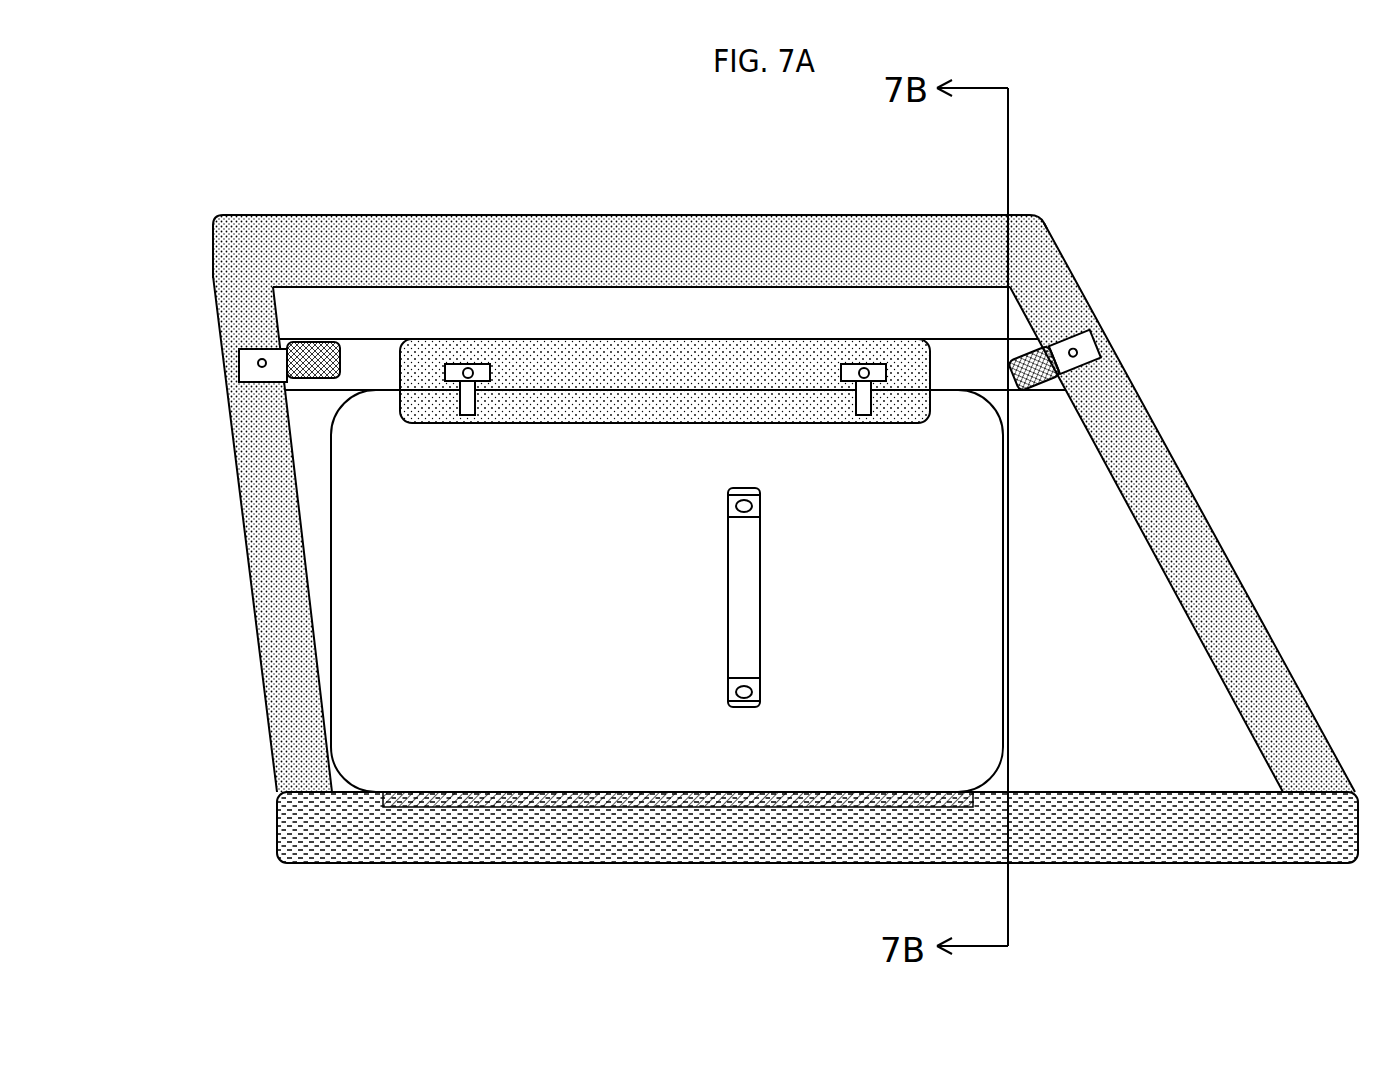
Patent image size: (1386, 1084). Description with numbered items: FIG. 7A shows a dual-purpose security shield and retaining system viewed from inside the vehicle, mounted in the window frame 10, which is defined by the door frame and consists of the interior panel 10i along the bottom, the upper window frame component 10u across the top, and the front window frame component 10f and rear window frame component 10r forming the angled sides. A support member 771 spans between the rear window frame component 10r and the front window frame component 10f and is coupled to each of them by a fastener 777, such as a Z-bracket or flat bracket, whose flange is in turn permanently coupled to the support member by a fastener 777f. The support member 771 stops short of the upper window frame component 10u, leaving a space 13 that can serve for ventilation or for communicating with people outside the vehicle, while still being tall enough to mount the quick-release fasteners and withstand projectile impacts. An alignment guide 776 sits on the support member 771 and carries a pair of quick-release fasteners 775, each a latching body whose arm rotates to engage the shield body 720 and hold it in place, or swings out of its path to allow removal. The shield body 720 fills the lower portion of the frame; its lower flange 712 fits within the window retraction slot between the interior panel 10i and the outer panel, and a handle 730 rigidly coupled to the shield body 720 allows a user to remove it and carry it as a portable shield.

The window frame 10 is at (1061, 157).
The upper window frame component 10u is at (516, 232).
The rear window frame component 10r is at (262, 533).
The front window frame component 10f is at (1200, 543).
The interior panel 10i is at (642, 857).
The space 13 is at (848, 318).
The lower flange 712 is at (832, 800).
The shield body 720 is at (407, 679).
The handle 730 is at (736, 640).
The support member 771 is at (385, 356).
The quick-release fastener 775 is at (862, 373).
The alignment guide 776 is at (437, 356).
The fastener 777 is at (325, 350).
The fastener 777f is at (258, 367).